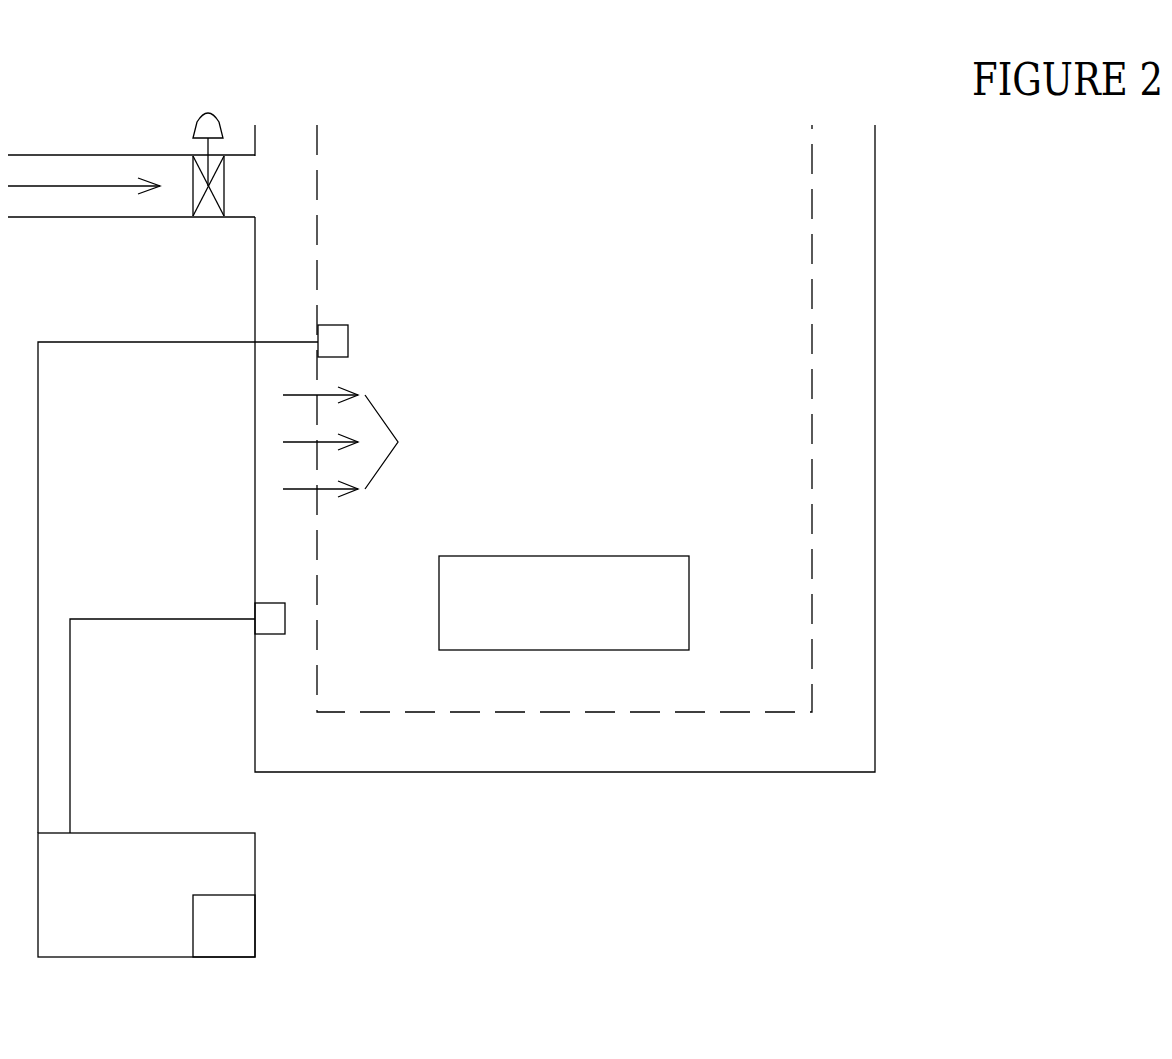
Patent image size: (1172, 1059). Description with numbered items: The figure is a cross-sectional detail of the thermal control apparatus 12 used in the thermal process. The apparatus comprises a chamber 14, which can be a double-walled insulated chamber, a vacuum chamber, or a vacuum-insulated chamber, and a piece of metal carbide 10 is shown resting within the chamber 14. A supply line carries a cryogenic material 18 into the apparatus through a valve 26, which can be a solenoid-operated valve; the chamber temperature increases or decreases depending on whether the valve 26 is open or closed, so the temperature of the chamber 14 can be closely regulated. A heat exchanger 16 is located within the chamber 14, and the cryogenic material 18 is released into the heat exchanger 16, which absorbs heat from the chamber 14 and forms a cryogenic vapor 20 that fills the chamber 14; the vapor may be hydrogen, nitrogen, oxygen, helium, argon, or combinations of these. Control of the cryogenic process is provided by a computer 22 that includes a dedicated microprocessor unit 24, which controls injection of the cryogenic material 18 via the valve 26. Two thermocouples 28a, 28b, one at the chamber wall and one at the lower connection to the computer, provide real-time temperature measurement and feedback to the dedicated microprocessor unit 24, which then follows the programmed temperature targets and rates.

The metal carbide 10 is at (564, 564).
The thermal control apparatus 12 is at (802, 891).
The chamber 14 is at (619, 448).
The heat exchanger 16 is at (650, 418).
The cryogenic material 18 is at (131, 162).
The cryogenic vapor 20 is at (398, 442).
The computer 22 is at (146, 871).
The dedicated microprocessor unit 24 is at (263, 917).
The valve 26 is at (174, 205).
The thermocouple 28a is at (396, 309).
The thermocouple 28b is at (226, 572).